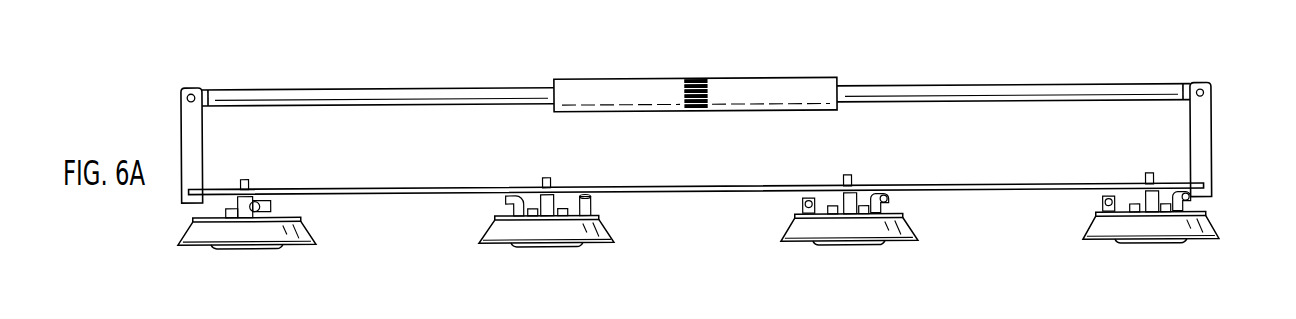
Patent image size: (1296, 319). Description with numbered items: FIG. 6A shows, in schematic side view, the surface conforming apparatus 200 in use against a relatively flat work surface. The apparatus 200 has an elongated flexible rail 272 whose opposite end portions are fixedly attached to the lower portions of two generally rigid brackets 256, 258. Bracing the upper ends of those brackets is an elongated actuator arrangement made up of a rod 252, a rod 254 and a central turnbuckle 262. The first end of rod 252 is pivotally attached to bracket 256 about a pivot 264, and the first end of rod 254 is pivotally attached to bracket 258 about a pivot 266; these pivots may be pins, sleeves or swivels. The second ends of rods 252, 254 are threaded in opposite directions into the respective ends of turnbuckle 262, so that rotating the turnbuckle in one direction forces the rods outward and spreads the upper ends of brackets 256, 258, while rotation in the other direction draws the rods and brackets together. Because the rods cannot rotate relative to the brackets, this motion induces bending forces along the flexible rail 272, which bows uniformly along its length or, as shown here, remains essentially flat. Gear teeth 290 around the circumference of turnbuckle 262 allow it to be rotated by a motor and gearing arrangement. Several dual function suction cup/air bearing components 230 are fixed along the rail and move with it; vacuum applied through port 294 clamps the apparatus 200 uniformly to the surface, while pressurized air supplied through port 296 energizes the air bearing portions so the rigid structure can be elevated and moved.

The apparatus 200 is at (467, 65).
The dual function suction cup/air bearing components 230 is at (305, 224).
The rod 252 is at (985, 92).
The rod 254 is at (302, 105).
The bracket 256 is at (1197, 148).
The bracket 258 is at (192, 118).
The turnbuckle 262 is at (777, 90).
The pivot 264 is at (1200, 96).
The pivot 266 is at (194, 92).
The flexible rail 272 is at (1062, 190).
The gear teeth 290 is at (693, 112).
The port 294 is at (594, 200).
The port 296 is at (507, 199).